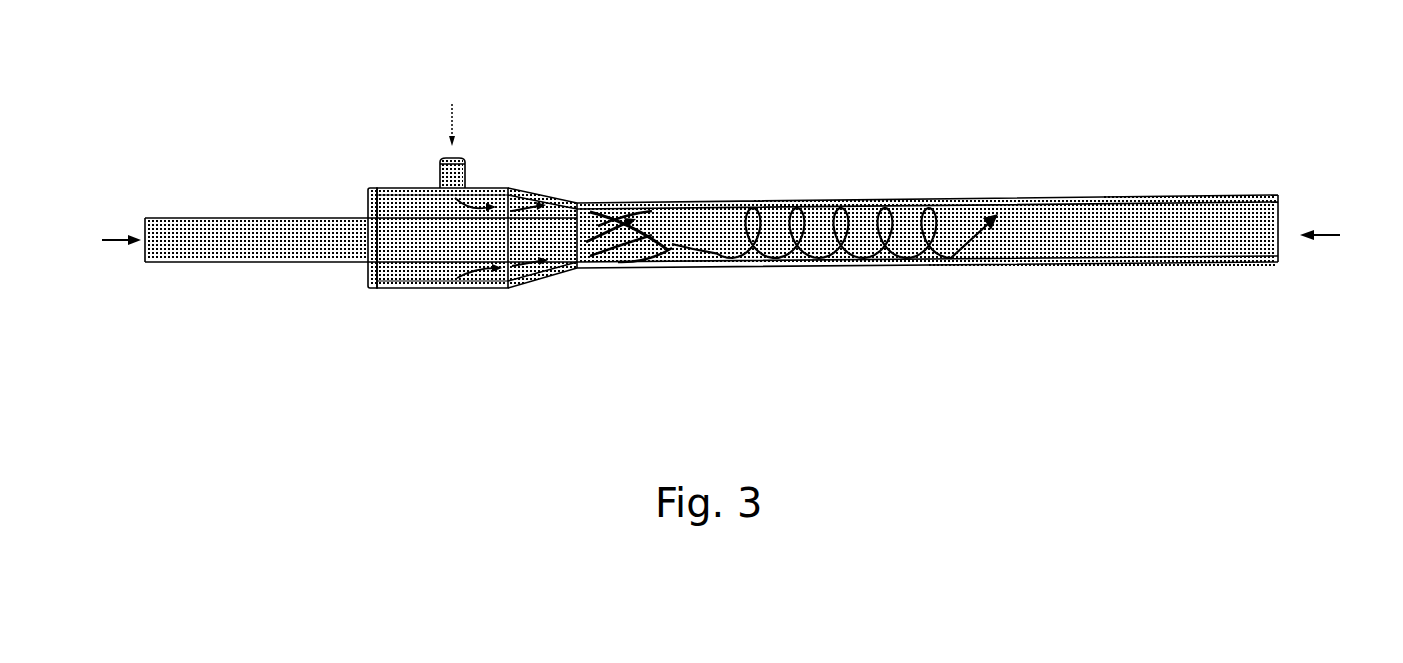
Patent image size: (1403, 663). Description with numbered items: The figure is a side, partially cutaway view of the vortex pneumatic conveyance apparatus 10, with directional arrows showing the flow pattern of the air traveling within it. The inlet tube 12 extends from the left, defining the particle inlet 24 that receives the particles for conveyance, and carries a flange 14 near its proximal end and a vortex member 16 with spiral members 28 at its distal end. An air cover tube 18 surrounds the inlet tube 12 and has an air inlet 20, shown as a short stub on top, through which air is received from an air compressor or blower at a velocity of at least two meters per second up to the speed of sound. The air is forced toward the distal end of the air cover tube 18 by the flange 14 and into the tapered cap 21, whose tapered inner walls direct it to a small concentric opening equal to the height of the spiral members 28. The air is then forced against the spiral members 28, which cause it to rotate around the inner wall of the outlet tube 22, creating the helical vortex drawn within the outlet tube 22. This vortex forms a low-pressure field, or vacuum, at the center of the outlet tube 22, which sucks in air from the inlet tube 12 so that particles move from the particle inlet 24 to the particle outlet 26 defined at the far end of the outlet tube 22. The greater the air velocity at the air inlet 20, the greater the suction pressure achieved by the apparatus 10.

The vortex pneumatic conveyance apparatus 10 is at (730, 58).
The inlet tube 12 is at (247, 196).
The flange 14 is at (372, 168).
The vortex member 16 is at (622, 186).
The air cover tube 18 is at (412, 168).
The air inlet 20 is at (476, 141).
The tapered cap 21 is at (543, 178).
The outlet tube 22 is at (958, 180).
The particle inlet 24 is at (104, 240).
The particle outlet 26 is at (1338, 235).
The spiral members 28 is at (645, 274).